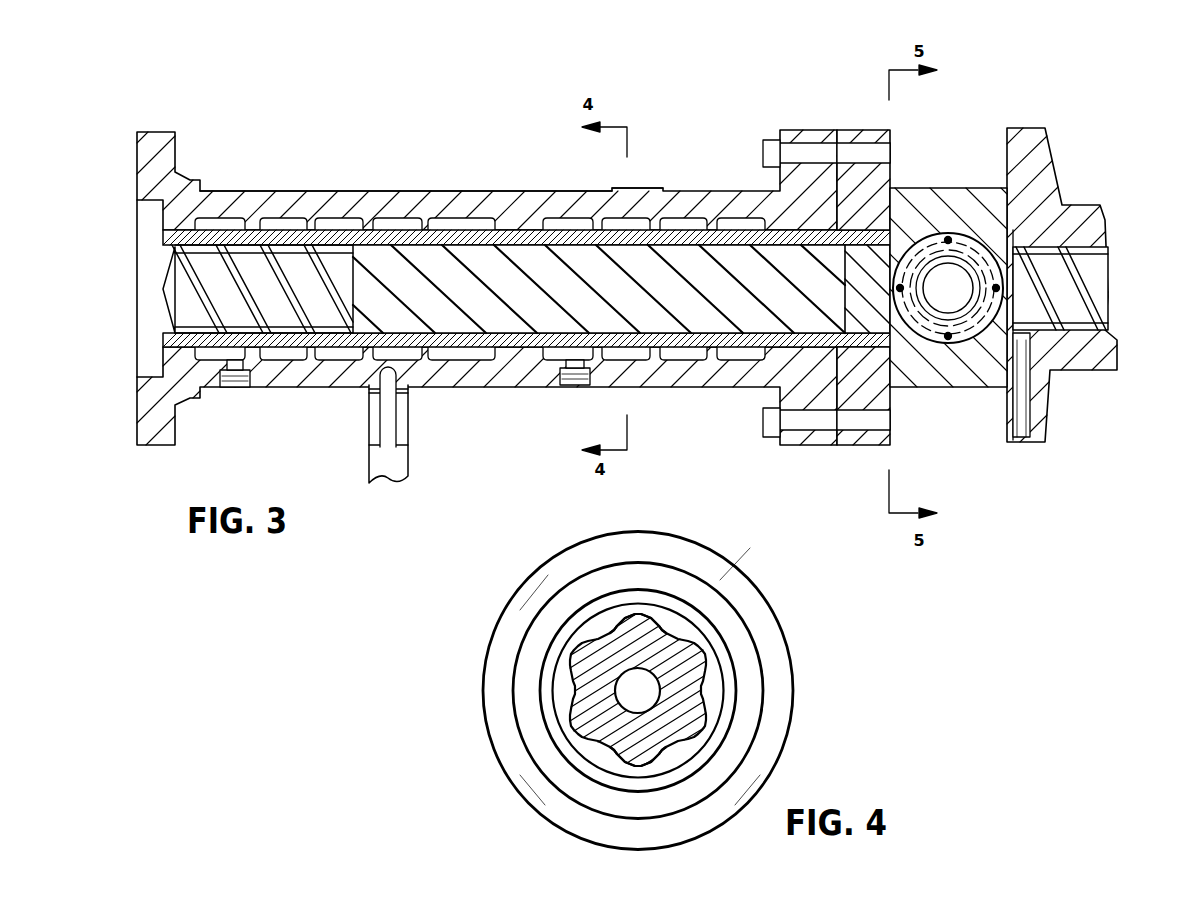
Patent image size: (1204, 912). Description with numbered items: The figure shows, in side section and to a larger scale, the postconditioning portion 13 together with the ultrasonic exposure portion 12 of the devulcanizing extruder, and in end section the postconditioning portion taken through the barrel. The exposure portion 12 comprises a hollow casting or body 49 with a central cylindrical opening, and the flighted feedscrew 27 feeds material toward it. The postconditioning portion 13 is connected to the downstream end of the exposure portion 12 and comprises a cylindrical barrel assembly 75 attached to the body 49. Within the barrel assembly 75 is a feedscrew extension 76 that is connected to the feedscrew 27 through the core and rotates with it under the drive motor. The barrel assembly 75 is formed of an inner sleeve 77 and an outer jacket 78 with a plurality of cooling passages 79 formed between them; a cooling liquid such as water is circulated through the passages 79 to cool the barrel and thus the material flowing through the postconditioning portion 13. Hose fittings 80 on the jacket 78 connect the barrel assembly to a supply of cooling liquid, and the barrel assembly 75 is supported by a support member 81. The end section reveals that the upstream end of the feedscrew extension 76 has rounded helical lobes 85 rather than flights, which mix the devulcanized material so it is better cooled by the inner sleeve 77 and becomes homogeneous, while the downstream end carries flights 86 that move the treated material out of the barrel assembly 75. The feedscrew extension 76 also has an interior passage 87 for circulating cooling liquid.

In FIG. 3, the ultrasonic exposure portion 12 is at (965, 92).
In FIG. 3, the postconditioning portion 13 is at (418, 80).
In FIG. 4, the postconditioning portion 13 is at (808, 594).
In FIG. 3, the feedscrew 27 is at (1088, 288).
In FIG. 3, the body 49 is at (963, 208).
In FIG. 3, the barrel assembly 75 is at (540, 185).
In FIG. 3, the feedscrew extension 76 is at (526, 279).
In FIG. 4, the feedscrew extension 76 is at (543, 669).
In FIG. 3, the inner sleeve 77 is at (452, 233).
In FIG. 4, the inner sleeve 77 is at (738, 628).
In FIG. 3, the outer jacket 78 is at (347, 200).
In FIG. 4, the outer jacket 78 is at (782, 697).
In FIG. 3, the cooling passages 79 is at (708, 218).
In FIG. 4, the cooling passages 79 is at (760, 752).
In FIG. 3, the hose fittings 80 is at (233, 387).
In FIG. 3, the support member 81 is at (387, 467).
In FIG. 4, the rounded helical lobes 85 is at (600, 650).
In FIG. 3, the flights 86 is at (248, 283).
In FIG. 4, the interior passage 87 is at (628, 690).